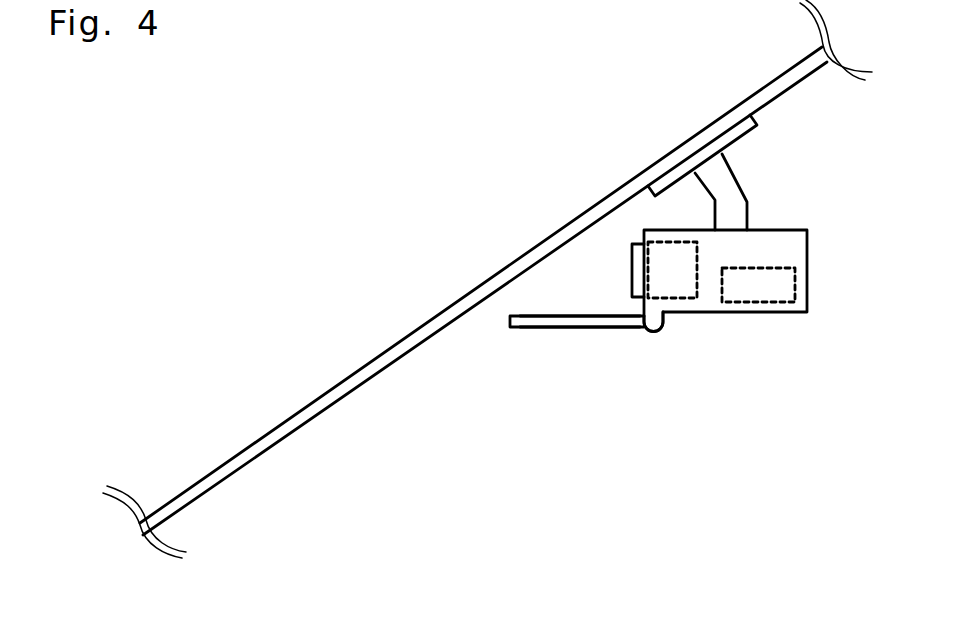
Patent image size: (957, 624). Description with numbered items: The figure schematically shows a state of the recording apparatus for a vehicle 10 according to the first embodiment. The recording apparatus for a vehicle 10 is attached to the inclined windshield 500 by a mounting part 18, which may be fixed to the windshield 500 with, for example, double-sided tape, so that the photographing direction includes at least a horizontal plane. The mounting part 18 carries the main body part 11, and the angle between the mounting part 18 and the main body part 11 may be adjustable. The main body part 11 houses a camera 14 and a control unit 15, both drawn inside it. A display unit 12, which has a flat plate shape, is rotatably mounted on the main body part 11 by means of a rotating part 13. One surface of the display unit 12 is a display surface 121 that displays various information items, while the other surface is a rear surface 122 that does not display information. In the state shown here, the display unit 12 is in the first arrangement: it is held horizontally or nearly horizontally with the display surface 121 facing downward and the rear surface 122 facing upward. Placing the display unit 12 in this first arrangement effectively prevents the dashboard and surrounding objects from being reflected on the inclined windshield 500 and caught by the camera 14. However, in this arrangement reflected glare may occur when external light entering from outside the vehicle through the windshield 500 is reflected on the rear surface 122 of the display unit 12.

The windshield 500 is at (230, 458).
The recording apparatus for a vehicle 10 is at (768, 337).
The main body part 11 is at (807, 244).
The display unit 12 is at (533, 328).
The display surface 121 is at (592, 328).
The rear surface 122 is at (548, 316).
The rotating part 13 is at (663, 333).
The camera 14 is at (632, 271).
The control unit 15 is at (795, 286).
The mounting part 18 is at (740, 183).